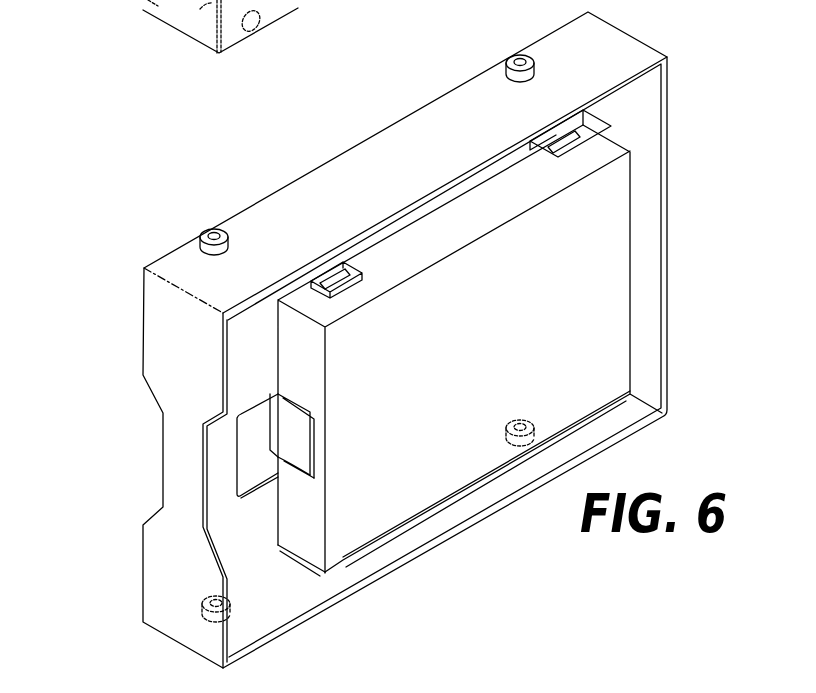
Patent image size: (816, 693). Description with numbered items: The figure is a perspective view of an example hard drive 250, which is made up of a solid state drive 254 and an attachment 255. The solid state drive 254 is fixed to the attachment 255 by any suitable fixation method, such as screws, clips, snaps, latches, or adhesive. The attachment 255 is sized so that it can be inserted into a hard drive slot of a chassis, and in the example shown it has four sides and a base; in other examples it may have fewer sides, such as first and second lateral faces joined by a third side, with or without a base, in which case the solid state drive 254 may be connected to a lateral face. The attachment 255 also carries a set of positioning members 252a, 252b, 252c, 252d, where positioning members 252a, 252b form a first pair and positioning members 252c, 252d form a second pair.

The hard drive 250 is at (92, 221).
The positioning member 252a is at (216, 230).
The positioning member 252b is at (518, 56).
The positioning member 252c is at (226, 606).
The positioning member 252d is at (528, 424).
The solid state drive 254 is at (470, 343).
The attachment 255 is at (445, 357).